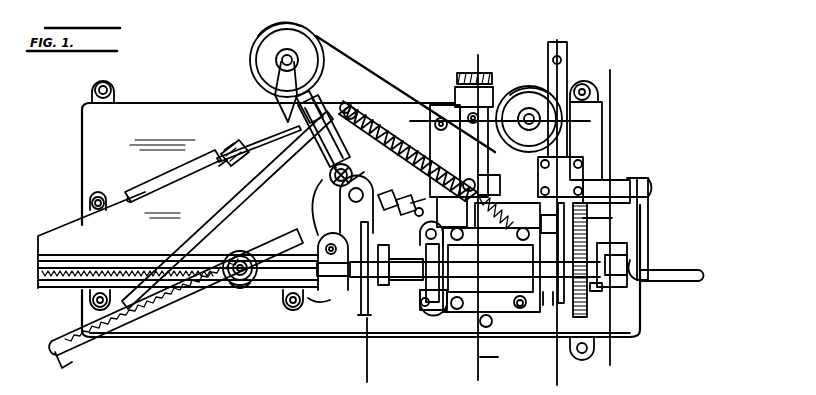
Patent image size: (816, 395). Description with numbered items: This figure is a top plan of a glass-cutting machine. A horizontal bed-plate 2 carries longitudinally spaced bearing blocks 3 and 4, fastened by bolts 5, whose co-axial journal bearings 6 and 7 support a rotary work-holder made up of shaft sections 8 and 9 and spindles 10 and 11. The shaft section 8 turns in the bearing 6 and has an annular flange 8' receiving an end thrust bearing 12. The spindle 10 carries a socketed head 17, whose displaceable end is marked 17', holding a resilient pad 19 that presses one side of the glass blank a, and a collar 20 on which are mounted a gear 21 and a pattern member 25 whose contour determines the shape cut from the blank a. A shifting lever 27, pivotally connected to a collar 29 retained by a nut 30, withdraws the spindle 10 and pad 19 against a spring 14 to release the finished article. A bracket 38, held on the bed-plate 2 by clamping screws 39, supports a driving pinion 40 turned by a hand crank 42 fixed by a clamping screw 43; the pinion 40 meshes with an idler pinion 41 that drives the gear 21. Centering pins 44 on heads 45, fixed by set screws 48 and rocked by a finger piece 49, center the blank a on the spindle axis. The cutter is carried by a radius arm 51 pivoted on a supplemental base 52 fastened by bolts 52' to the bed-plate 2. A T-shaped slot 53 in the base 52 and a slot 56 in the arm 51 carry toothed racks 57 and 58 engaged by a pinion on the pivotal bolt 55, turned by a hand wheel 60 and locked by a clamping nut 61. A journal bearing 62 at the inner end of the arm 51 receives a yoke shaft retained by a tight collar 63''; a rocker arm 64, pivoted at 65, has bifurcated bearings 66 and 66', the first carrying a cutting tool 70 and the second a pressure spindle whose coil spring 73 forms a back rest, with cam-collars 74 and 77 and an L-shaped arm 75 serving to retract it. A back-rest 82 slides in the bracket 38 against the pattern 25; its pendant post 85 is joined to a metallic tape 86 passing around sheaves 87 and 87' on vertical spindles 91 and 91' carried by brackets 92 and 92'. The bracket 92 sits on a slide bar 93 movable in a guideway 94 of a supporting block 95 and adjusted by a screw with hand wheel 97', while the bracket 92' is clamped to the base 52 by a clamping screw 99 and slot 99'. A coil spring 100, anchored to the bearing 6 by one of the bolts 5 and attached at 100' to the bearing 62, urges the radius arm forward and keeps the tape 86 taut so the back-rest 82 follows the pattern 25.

The bed-plate 2 is at (180, 100).
The bearing block 3 is at (492, 320).
The bearing block 4 is at (308, 306).
The bolts 5 is at (540, 218).
The journal bearing 6 is at (502, 210).
The journal bearing 7 is at (399, 217).
The shaft section 8 is at (505, 217).
The annular flange 8' is at (426, 307).
The shaft section 9 is at (270, 22).
The spindle 10 is at (475, 269).
The spindle 11 is at (258, 144).
The anti-friction end thrust bearing 12 is at (243, 252).
The spring 14 is at (330, 240).
The socketed head 17 is at (377, 273).
The lever end 17' is at (353, 339).
The resilient pad 19 is at (381, 252).
The collar 20 is at (600, 292).
The gear 21 is at (582, 268).
The pattern member 25 is at (560, 303).
The shifting lever 27 is at (640, 282).
The collar 29 is at (615, 245).
The nut 30 is at (630, 252).
The supporting bracket 38 is at (585, 170).
The clamping screws 39 is at (542, 167).
The driving pinion 40 is at (618, 186).
The idler pinion 41 is at (606, 220).
The hand crank 42 is at (656, 269).
The clamping screw 43 is at (654, 193).
The centering pins 44 is at (427, 245).
The heads 45 is at (440, 227).
The set screws 48 is at (449, 246).
The finger piece 49 is at (481, 350).
The radius arm 51 is at (227, 210).
The supplemental supporting base 52 is at (178, 214).
The bolts 52' is at (182, 268).
The T-shaped slot 53 is at (135, 262).
The pivotal bolt 55 is at (248, 258).
The lengthwise slot 56 is at (55, 352).
The toothed rack 57 is at (62, 277).
The toothed rack 58 is at (150, 322).
The hand wheel 60 is at (238, 287).
The clamping nut 61 is at (233, 262).
The journal bearing 62 is at (318, 145).
The tight collar 63'' is at (323, 100).
The rocker arm 64 is at (360, 181).
The pivot 65 is at (350, 172).
The bearing 66 is at (315, 207).
The bearing 66' is at (387, 194).
The cutting tool 70 is at (337, 250).
The coil spring 73 is at (356, 205).
The cam-collar 74 is at (424, 212).
The L-shaped arm 75 is at (405, 201).
The cam-collar 77 is at (424, 195).
The back-rest 82 is at (576, 84).
The pendant post 85 is at (553, 60).
The metallic tape 86 is at (377, 74).
The sheave 87 is at (522, 81).
The sheave 87' is at (311, 34).
The vertical spindle 91 is at (529, 119).
The vertical spindle 91' is at (287, 60).
The bracket 92 is at (438, 166).
The bracket 92' is at (173, 167).
The slide bar 93 is at (458, 98).
The guideway 94 is at (481, 185).
The supporting block 95 is at (435, 124).
The hand wheel 97' is at (466, 67).
The clamping screw 99 is at (235, 141).
The slot 99' is at (220, 169).
The coil spring 100 is at (426, 165).
The spring attachment 100' is at (361, 98).
The blank a is at (370, 318).